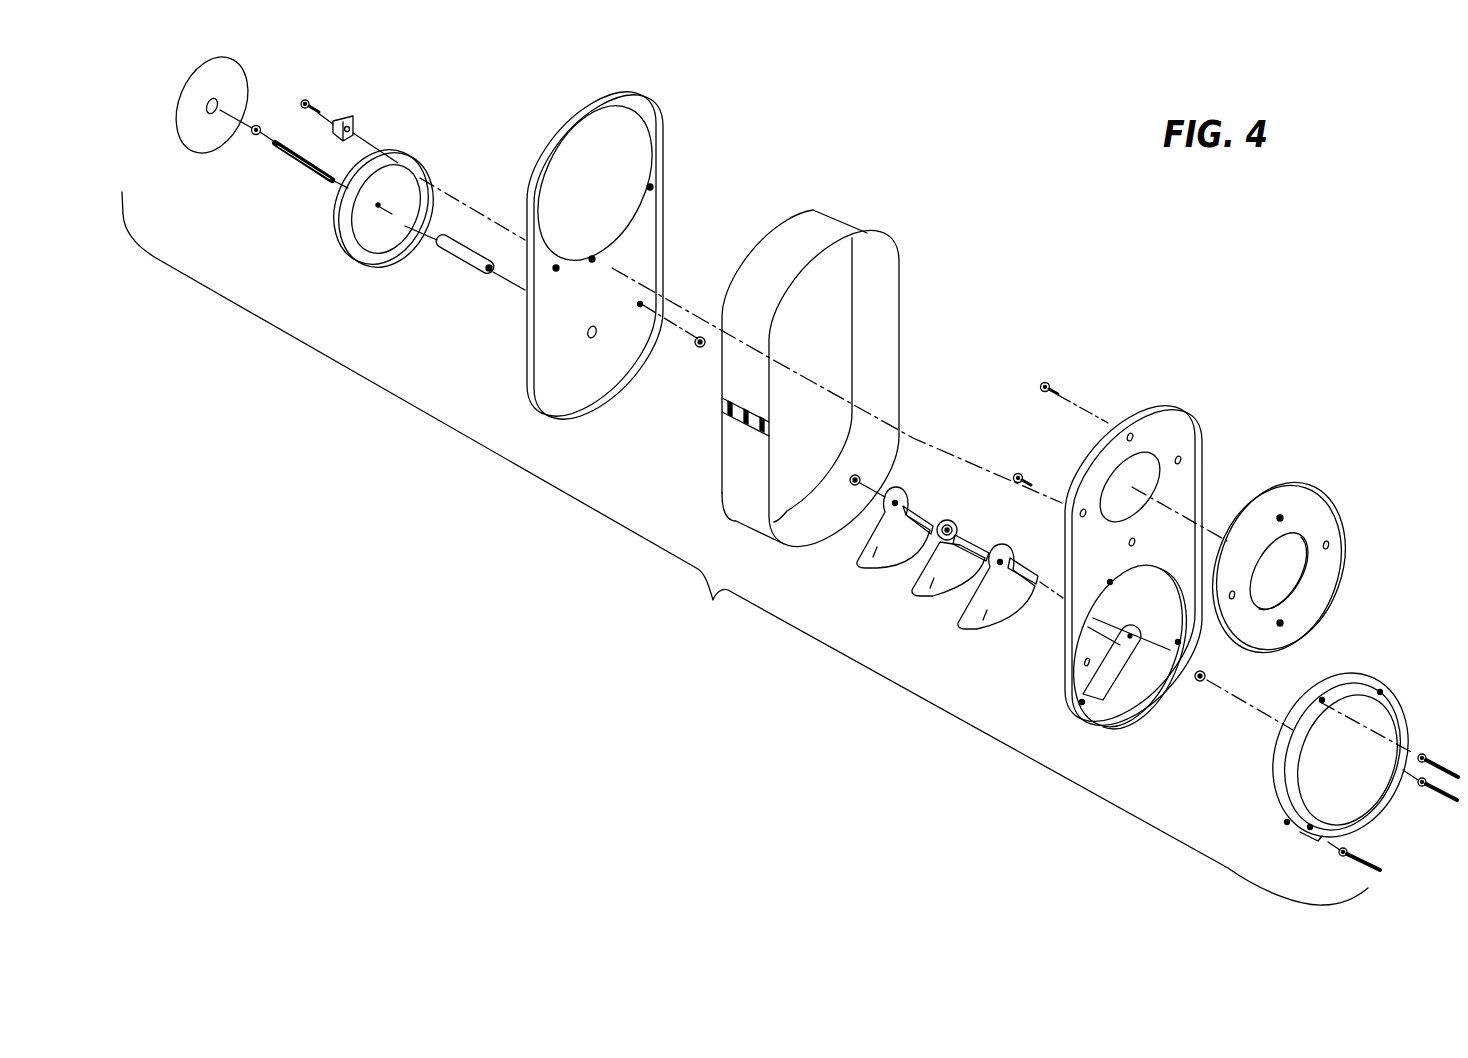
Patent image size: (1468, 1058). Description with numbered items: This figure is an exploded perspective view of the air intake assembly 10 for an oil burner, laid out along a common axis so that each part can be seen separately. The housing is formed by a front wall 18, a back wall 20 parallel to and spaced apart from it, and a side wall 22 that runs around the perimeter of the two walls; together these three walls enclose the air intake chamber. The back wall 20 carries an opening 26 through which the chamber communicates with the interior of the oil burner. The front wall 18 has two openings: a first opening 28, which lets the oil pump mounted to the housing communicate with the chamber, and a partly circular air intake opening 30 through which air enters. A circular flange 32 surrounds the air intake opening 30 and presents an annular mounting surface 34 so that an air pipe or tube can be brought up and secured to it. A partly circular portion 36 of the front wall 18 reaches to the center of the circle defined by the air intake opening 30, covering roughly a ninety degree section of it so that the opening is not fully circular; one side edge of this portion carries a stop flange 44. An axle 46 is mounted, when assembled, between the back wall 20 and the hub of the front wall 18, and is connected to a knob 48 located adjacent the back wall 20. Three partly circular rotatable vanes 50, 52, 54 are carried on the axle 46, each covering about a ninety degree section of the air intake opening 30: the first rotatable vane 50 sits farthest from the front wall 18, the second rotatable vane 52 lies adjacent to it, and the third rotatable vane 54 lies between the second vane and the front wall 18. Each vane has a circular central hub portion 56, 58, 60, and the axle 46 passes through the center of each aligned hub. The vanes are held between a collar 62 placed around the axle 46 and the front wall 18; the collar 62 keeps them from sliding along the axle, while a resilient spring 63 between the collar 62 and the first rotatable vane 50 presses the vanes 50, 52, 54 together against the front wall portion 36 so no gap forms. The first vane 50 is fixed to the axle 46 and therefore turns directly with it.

The air intake assembly 10 is at (745, 548).
The front wall 18 is at (1125, 561).
The back wall 20 is at (631, 244).
The side wall 22 is at (838, 228).
The opening 26 is at (619, 142).
The first opening 28 is at (1148, 463).
The air intake opening 30 is at (1087, 664).
The circular flange 32 is at (1328, 742).
The annular mounting surface 34 is at (1298, 784).
The partly circular portion of the front wall 36 is at (1101, 663).
The stop flange 44 is at (1097, 704).
The axle 46 is at (297, 160).
The knob 48 is at (342, 220).
The first rotatable vane 50 is at (875, 558).
The second rotatable vane 52 is at (930, 595).
The third rotatable vane 54 is at (985, 620).
The circular central hub portion 56 is at (908, 492).
The circular central hub portion 58 is at (962, 525).
The circular central hub portion 60 is at (1013, 553).
The collar 62 is at (458, 258).
The resilient spring 63 is at (834, 470).